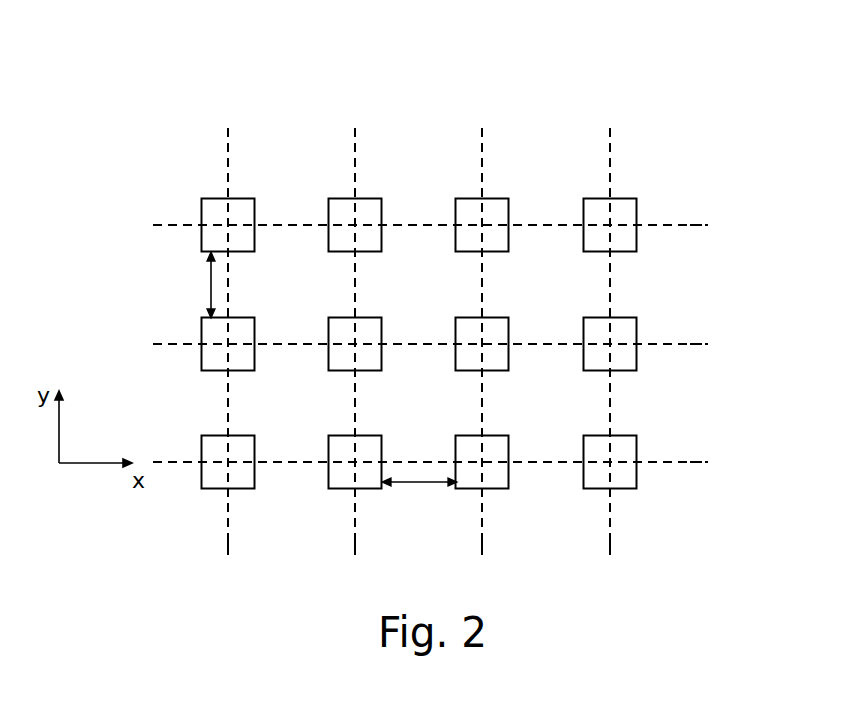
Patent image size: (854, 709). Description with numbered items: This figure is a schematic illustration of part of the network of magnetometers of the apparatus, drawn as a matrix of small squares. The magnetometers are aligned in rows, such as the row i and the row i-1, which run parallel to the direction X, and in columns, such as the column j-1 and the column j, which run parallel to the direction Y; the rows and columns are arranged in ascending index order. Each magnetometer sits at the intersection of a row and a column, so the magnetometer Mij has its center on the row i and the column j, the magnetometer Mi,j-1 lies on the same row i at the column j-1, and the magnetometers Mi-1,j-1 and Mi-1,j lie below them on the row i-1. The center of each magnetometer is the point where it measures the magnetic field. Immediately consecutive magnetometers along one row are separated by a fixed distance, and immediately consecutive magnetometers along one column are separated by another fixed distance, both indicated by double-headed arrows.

The magnetometer Mi,j-1 is at (242, 329).
The magnetometer Mij is at (369, 329).
The magnetometer Mi-1,j-1 is at (242, 448).
The magnetometer Mi-1,j is at (369, 448).
The row i is at (700, 343).
The row i-1 is at (697, 462).
The column j-1 is at (228, 551).
The column j is at (355, 551).